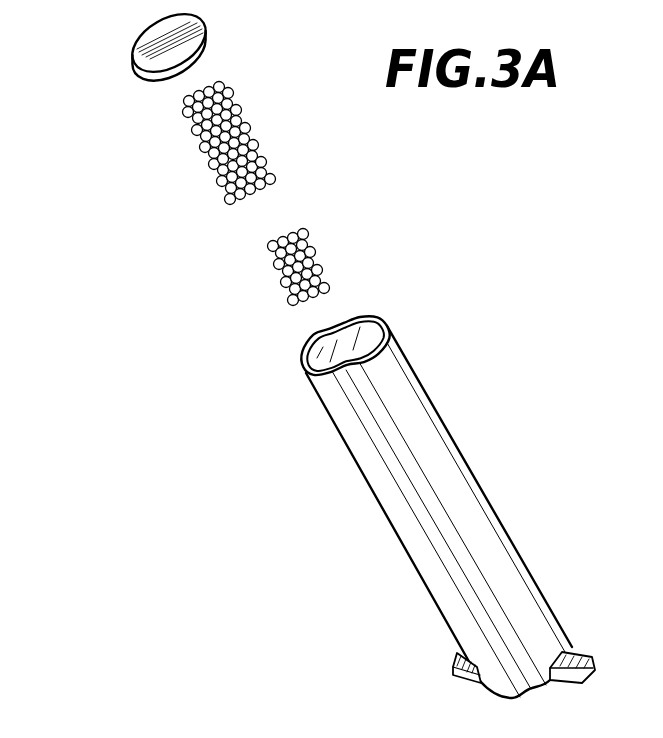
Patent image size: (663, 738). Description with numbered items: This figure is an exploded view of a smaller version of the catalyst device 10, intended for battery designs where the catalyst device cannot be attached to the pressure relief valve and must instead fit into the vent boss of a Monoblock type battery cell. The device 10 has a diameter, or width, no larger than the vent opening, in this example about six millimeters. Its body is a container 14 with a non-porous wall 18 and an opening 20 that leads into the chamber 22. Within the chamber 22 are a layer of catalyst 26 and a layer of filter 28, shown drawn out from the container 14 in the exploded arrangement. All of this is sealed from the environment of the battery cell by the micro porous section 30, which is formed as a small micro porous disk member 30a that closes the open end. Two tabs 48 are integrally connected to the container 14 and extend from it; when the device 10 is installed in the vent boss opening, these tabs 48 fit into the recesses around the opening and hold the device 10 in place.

The catalyst device 10 is at (434, 477).
The container 14 is at (373, 495).
The non-porous wall 18 is at (348, 427).
The opening 20 is at (323, 352).
The chamber 22 is at (347, 357).
The layer of catalyst 26 is at (293, 331).
The layer of filter 28 is at (226, 225).
The micro porous section 30 is at (118, 56).
The micro porous disk member 30a is at (146, 57).
The tabs 48 is at (460, 658).